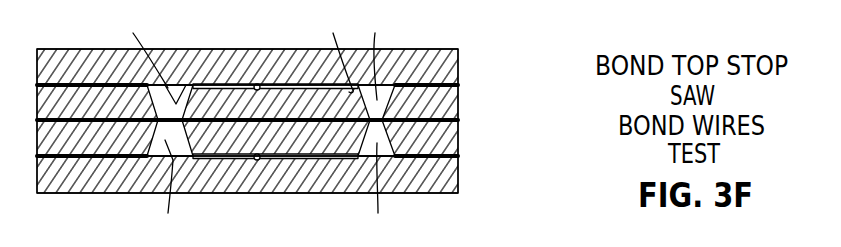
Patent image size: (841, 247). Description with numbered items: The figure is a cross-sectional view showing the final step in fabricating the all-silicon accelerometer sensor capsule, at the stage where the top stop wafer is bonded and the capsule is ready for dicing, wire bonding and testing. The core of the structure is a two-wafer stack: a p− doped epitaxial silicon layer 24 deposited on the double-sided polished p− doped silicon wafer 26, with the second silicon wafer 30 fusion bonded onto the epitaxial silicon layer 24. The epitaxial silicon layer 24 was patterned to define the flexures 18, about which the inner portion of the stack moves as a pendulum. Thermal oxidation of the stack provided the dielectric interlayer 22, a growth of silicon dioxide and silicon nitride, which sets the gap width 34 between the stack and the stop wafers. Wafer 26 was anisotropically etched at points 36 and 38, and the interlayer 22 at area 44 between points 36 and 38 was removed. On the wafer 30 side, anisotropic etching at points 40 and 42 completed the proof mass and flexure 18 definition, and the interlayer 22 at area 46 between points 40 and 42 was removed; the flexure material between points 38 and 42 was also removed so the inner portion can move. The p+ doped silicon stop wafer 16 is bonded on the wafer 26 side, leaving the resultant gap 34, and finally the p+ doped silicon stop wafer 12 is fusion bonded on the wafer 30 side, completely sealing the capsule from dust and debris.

The p+ doped silicon stop wafer 12 is at (453, 65).
The p+ doped silicon stop wafer 16 is at (457, 185).
The flexure 18 is at (229, 51).
The dielectric interlayer 22 is at (455, 83).
The p− doped epitaxial silicon layer 24 is at (450, 121).
The p− doped silicon wafer 26 is at (458, 137).
The second silicon wafer 30 is at (453, 105).
The gap width 34 is at (197, 78).
The etch point 36 is at (173, 189).
The etch point 38 is at (380, 191).
The etch point 40 is at (178, 97).
The etch point 42 is at (380, 54).
The interlayer removal area 44 is at (258, 160).
The interlayer removal area 46 is at (258, 84).